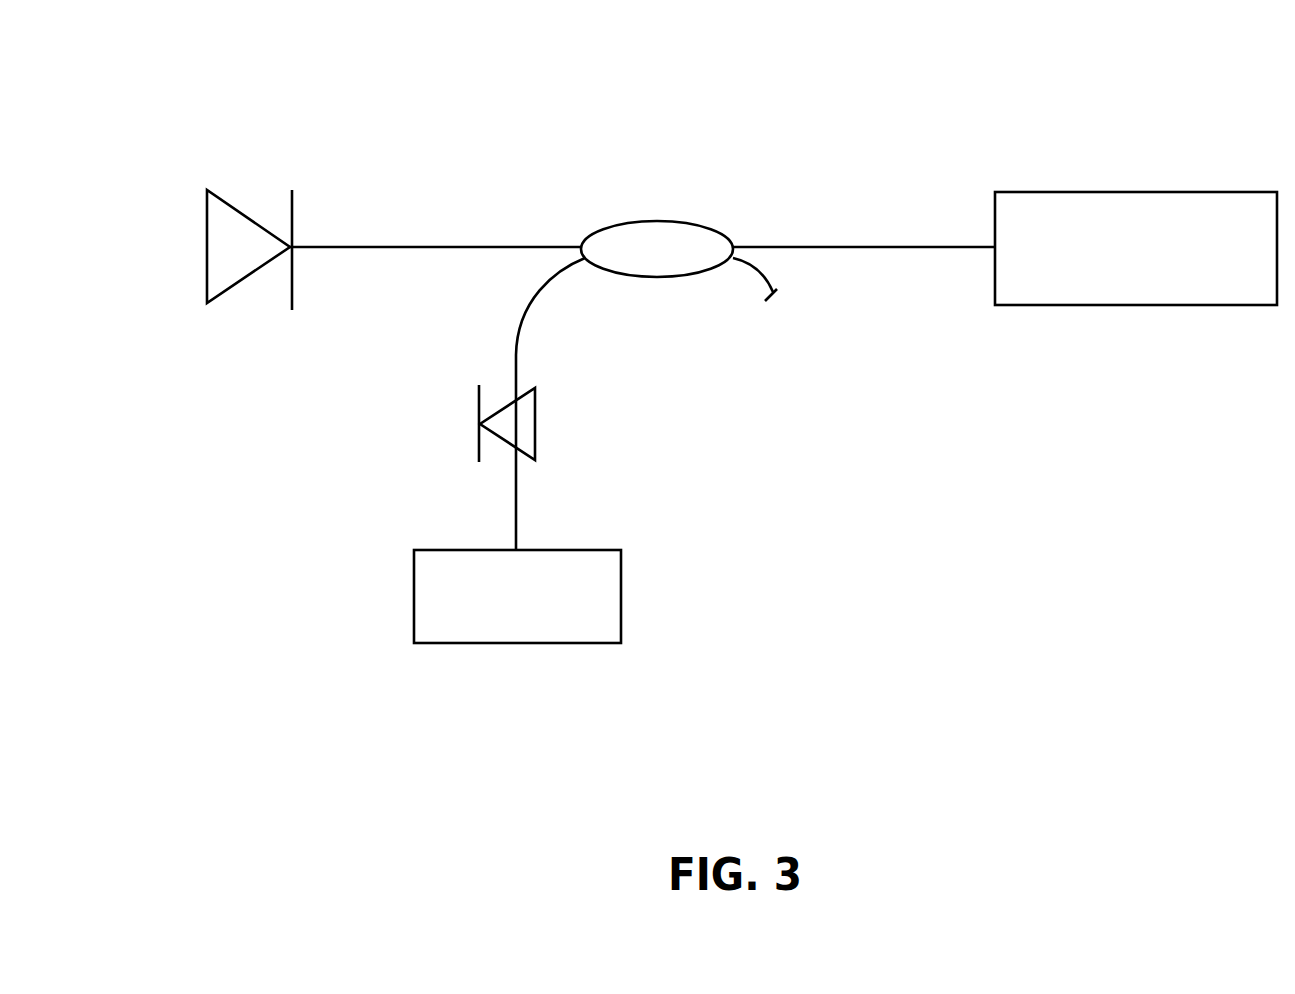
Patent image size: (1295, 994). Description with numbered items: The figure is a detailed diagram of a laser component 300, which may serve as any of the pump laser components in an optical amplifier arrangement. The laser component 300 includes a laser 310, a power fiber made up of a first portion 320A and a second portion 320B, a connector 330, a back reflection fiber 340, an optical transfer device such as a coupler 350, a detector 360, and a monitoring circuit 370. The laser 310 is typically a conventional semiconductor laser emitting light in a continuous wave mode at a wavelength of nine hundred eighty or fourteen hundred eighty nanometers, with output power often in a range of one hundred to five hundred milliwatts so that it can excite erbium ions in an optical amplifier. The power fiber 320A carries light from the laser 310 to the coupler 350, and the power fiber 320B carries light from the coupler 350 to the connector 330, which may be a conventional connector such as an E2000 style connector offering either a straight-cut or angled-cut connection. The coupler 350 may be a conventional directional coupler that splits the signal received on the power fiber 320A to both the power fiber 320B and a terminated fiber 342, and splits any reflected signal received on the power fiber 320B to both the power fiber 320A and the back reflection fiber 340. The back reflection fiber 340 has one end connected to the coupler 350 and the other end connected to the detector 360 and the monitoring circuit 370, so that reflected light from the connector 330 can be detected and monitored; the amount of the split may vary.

The laser component 300 is at (163, 31).
The laser 310 is at (208, 191).
The power fiber 320A is at (387, 247).
The power fiber 320B is at (877, 247).
The connector 330 is at (1142, 191).
The back reflection fiber 340 is at (547, 292).
The terminated fiber 342 is at (750, 272).
The coupler 350 is at (659, 219).
The detector 360 is at (538, 414).
The monitoring circuit 370 is at (620, 549).